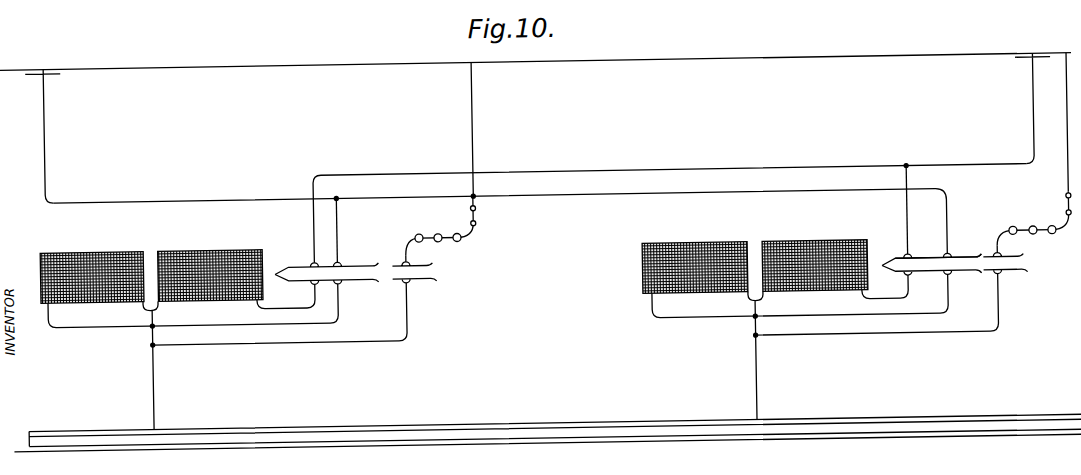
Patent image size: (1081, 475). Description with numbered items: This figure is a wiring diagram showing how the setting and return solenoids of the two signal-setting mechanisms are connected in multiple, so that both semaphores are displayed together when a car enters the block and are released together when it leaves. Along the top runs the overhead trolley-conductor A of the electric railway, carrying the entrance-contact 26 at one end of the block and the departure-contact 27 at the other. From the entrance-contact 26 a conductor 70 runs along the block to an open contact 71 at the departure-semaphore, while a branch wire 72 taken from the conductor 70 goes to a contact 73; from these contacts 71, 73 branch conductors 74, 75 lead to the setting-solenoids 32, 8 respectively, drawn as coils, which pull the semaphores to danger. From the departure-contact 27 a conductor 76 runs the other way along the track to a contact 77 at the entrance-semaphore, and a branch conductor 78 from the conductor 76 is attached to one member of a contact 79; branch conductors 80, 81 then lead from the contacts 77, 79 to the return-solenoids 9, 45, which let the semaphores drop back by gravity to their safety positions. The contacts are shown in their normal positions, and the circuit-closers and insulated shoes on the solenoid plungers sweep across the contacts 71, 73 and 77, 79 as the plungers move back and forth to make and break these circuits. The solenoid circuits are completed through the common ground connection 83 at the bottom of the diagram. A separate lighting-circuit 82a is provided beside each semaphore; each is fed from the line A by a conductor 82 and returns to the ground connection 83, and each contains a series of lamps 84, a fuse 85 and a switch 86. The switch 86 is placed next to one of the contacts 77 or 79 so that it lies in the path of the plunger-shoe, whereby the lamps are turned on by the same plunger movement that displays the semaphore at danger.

The overhead trolley-conductor A is at (582, 68).
The entrance-contact 26 is at (1017, 75).
The departure-contact 27 is at (52, 76).
The lighting-circuit 82a is at (470, 118).
The conductor 70 is at (807, 180).
The conductor 76 is at (587, 207).
The branch conductor 78 is at (334, 233).
The branch wire 72 is at (902, 230).
The open contact 71 is at (288, 272).
The contact 73 is at (926, 275).
The contact 77 is at (958, 269).
The switch 86 is at (408, 285).
The contact 79 is at (352, 289).
The branch conductor 74 is at (276, 295).
The branch conductor 75 is at (855, 314).
The branch conductor 80 is at (715, 330).
The branch conductor 81 is at (217, 331).
The lighting-circuit conductor 82 is at (332, 349).
The ground connection 83 is at (148, 386).
The lamps 84 is at (1031, 234).
The fuse 85 is at (476, 225).
The tank 45 is at (68, 254).
The semaphore-setting solenoid 32 is at (199, 255).
The return-solenoid 9 is at (678, 254).
The setting-solenoid 8 is at (794, 255).